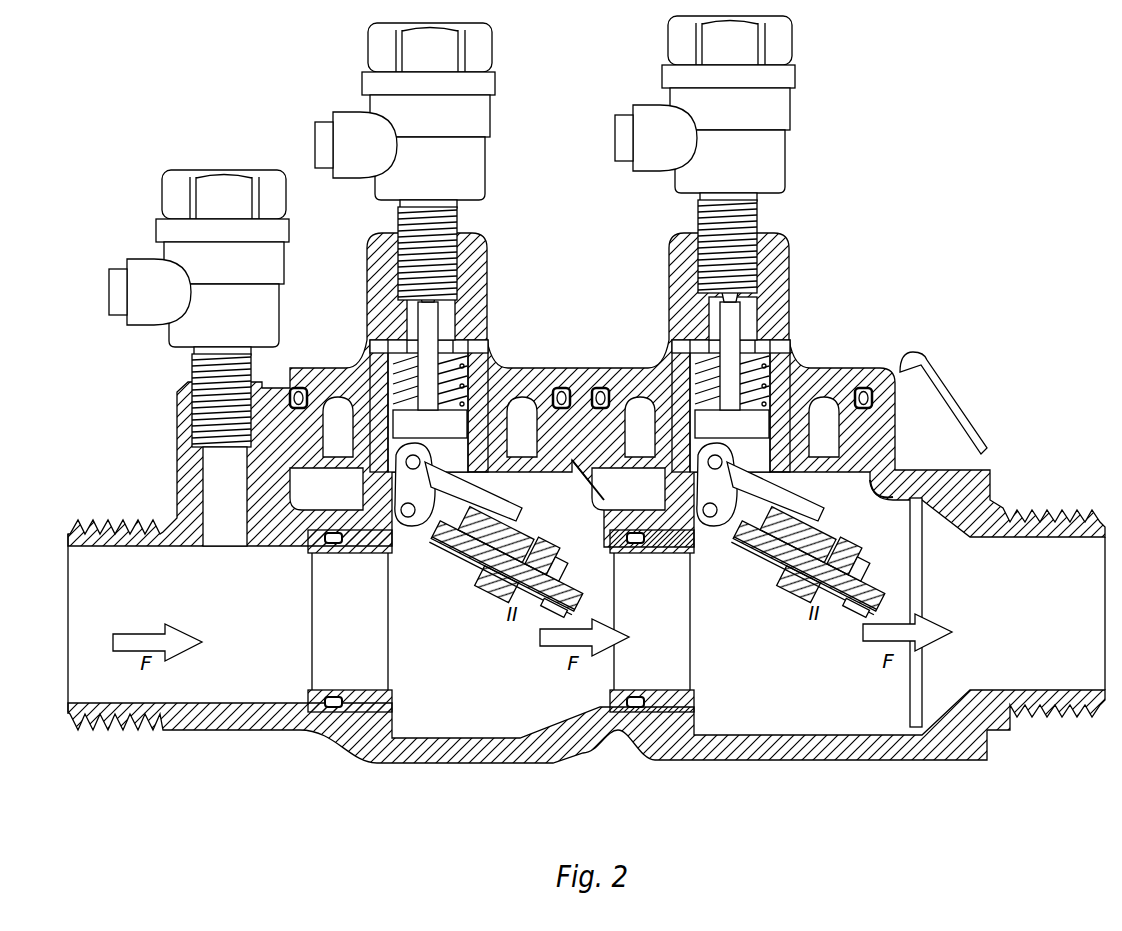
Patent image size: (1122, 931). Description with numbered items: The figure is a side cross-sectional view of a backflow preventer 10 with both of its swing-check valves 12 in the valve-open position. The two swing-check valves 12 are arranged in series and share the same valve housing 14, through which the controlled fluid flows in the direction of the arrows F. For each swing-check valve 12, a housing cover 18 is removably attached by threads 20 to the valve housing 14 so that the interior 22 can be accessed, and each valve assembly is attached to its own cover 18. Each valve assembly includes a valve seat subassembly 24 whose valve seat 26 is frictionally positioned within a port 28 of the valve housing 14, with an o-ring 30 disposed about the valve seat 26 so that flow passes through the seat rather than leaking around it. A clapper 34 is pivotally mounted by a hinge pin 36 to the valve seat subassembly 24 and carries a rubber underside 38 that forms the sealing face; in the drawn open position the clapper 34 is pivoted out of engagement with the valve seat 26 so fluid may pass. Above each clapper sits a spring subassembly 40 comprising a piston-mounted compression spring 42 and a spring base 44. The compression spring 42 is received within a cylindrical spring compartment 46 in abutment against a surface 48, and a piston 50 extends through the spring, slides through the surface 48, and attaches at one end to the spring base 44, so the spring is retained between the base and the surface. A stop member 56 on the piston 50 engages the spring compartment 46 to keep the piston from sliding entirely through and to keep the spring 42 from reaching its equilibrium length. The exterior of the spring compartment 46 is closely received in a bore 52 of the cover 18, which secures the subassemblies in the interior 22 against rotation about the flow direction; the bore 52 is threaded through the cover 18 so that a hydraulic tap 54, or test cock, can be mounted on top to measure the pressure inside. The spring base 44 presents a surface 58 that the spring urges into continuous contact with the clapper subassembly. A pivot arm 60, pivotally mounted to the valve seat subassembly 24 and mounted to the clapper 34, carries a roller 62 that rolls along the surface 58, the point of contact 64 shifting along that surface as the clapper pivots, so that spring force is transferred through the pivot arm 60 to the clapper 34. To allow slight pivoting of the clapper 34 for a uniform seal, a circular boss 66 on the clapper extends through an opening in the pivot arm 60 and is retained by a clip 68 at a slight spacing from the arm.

The backflow preventer 10 is at (960, 236).
The swing-check valve 12 is at (540, 238).
The valve housing 14 is at (582, 372).
The housing cover 18 is at (337, 377).
The threads 20 is at (893, 418).
The interior 22 is at (542, 722).
The valve seat subassembly 24 is at (361, 566).
The valve seat 26 is at (354, 745).
The port 28 is at (327, 651).
The o-ring 30 is at (333, 708).
The clapper 34 is at (471, 580).
The hinge pin 36 is at (368, 498).
The rubber underside 38 is at (441, 535).
The spring subassembly 40 is at (432, 436).
The piston-mounted compression spring 42 is at (561, 386).
The spring base 44 is at (520, 472).
The cylindrical spring compartment 46 is at (388, 345).
The surface 48 is at (435, 318).
The piston 50 is at (430, 355).
The bore 52 is at (438, 297).
The hydraulic tap 54 is at (460, 107).
The stop member 56 is at (478, 275).
The surface 58 is at (470, 470).
The pivot arm 60 is at (437, 480).
The roller 62 is at (355, 380).
The point of contact 64 is at (470, 392).
The circular boss 66 is at (537, 502).
The clip 68 is at (548, 528).